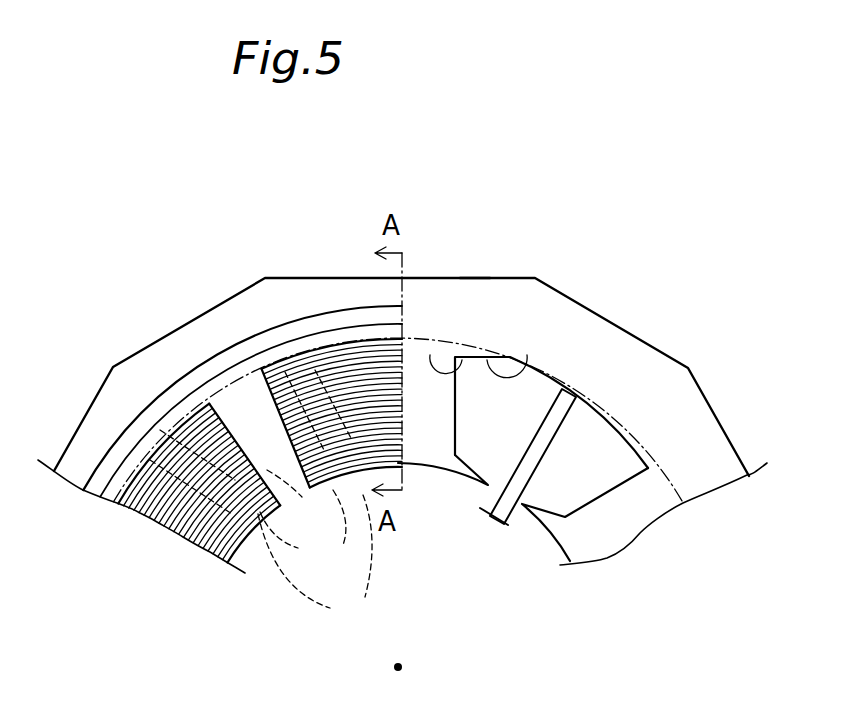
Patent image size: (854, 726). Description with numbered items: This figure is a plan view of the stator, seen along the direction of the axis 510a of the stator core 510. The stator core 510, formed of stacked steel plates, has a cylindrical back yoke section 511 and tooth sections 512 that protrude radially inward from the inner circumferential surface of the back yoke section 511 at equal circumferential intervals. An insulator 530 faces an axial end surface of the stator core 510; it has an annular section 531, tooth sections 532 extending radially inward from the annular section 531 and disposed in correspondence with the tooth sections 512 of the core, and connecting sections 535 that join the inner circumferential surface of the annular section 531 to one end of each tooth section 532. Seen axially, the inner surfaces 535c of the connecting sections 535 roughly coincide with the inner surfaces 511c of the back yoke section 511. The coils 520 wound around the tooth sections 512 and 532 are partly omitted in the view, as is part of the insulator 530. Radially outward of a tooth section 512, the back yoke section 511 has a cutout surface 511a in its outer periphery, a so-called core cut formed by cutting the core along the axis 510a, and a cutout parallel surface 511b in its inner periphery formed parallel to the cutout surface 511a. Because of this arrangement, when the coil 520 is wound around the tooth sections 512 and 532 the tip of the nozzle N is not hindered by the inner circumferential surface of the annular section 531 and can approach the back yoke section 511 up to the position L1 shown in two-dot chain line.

The stator core 510 is at (565, 297).
The axis 510a is at (404, 667).
The back yoke section 511 is at (608, 340).
The cutout surface 511a is at (473, 278).
The cutout parallel surface 511b is at (430, 355).
The inner surface 511c is at (527, 355).
The tooth section 512 is at (430, 443).
The coil 520 is at (277, 412).
The insulator 530 is at (237, 352).
The annular section 531 is at (227, 392).
The tooth section 532 is at (319, 561).
The connecting section 535 is at (304, 502).
The inner surface 535c is at (311, 537).
The nozzle N is at (540, 447).
The position L1 is at (622, 420).